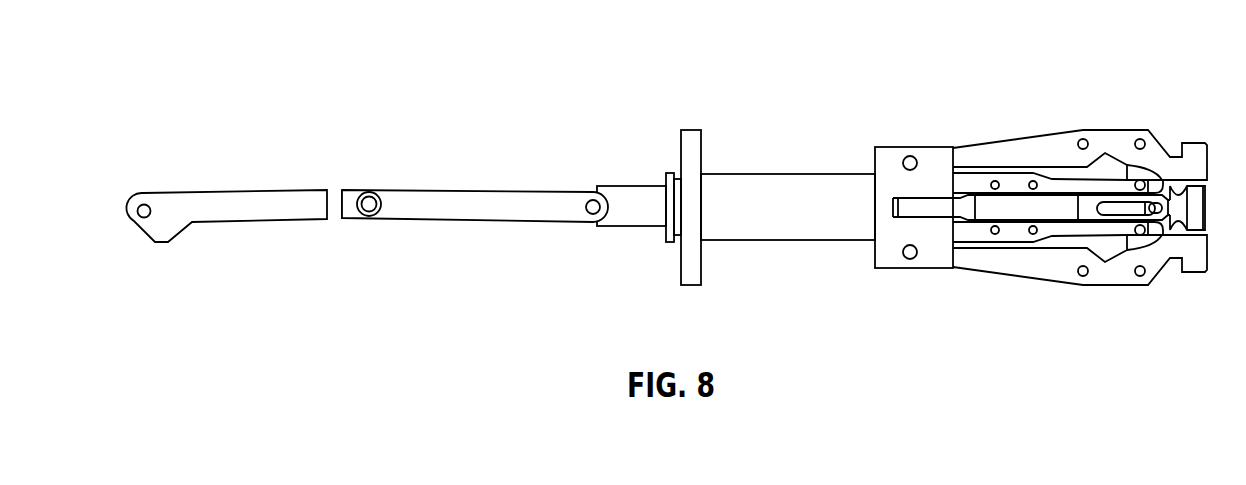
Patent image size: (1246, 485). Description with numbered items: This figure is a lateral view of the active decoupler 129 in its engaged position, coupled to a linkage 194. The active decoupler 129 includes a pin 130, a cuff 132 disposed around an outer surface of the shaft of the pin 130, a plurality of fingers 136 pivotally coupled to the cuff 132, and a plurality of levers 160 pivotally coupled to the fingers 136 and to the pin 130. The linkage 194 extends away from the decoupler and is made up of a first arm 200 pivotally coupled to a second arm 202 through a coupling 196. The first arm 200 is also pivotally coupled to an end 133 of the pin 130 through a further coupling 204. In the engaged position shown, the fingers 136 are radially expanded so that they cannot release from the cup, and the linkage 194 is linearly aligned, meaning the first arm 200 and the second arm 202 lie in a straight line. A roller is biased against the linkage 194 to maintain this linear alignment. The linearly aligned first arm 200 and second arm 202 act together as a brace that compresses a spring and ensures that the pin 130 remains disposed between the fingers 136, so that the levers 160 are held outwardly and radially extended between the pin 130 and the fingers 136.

The active decoupler 129 is at (996, 52).
The pin 130 is at (812, 187).
The cuff 132 is at (910, 260).
The end 133 is at (609, 227).
The fingers 136 is at (1055, 147).
The levers 160 is at (1139, 176).
The linkage 194 is at (256, 191).
The coupling 196 is at (369, 211).
The first arm 200 is at (501, 212).
The second arm 202 is at (262, 223).
The coupling 204 is at (592, 200).